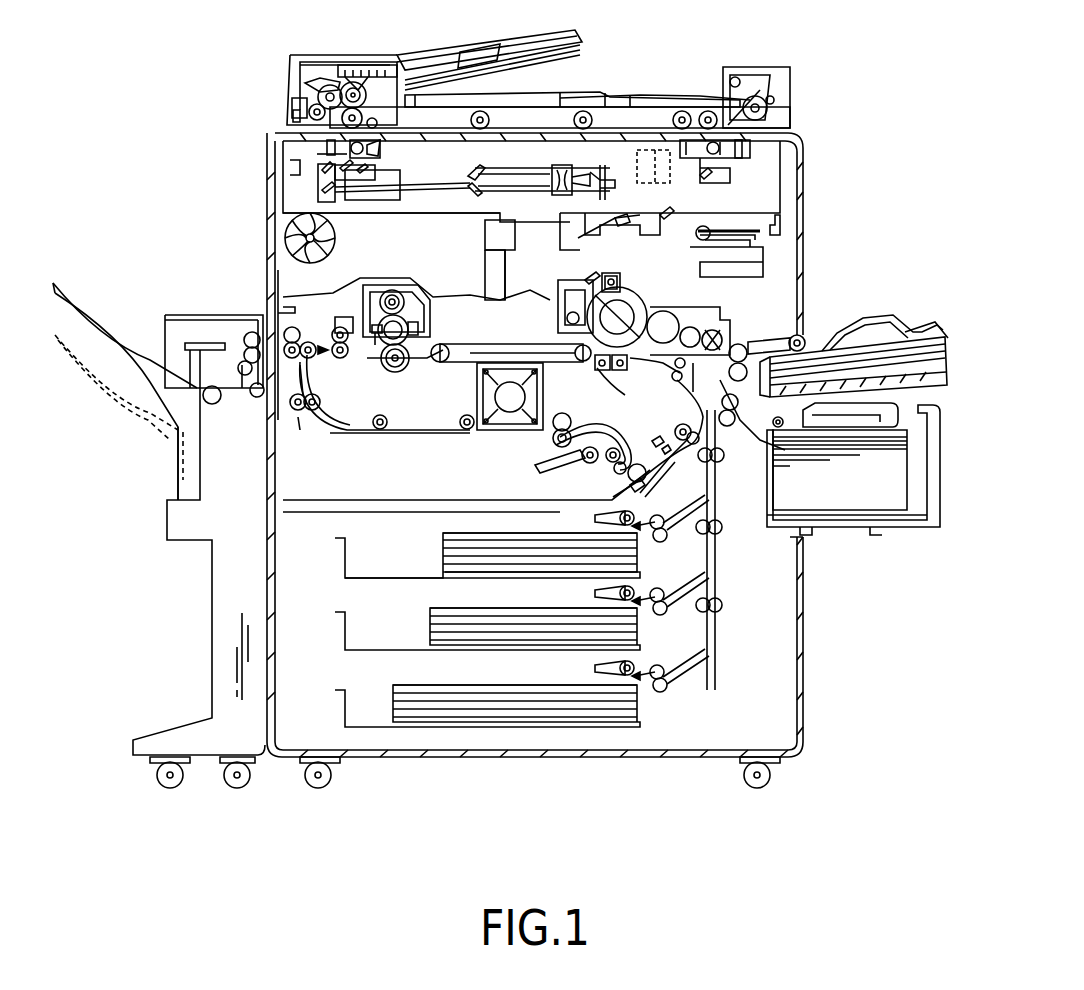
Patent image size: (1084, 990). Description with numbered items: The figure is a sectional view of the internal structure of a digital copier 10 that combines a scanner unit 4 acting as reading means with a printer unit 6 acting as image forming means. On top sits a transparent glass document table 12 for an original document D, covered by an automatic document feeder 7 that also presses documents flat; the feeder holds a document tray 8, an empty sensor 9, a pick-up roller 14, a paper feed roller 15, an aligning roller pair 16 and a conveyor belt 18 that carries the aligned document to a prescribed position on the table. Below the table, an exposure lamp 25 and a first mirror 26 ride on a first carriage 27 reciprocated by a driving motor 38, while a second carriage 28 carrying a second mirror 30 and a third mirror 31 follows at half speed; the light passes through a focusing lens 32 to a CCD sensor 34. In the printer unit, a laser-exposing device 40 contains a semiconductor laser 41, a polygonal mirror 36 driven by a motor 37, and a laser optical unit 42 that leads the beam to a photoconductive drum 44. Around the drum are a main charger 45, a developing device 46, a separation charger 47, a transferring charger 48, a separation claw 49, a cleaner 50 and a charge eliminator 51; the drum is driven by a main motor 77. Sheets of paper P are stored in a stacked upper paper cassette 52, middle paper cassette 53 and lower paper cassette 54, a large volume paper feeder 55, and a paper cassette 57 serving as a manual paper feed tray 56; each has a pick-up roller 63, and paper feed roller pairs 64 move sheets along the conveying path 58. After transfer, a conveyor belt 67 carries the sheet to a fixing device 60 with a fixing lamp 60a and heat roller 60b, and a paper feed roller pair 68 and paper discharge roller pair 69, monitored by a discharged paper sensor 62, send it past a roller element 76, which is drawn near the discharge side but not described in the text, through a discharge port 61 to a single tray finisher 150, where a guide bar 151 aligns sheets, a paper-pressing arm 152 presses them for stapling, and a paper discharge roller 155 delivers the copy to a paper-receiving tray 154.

The digital copier 10 is at (900, 124).
The automatic document feeder 7 is at (438, 38).
The document tray 8 is at (458, 55).
The empty sensor 9 is at (355, 80).
The pick-up roller 14 is at (345, 83).
The paper feed roller 15 is at (305, 102).
The aligning roller pair 16 is at (295, 118).
The conveyor belt 18 is at (510, 108).
The document table 12 is at (640, 125).
The driving motor 38 is at (663, 150).
The scanner unit 4 is at (808, 186).
The first carriage 27 is at (327, 148).
The exposure lamp 25 is at (380, 152).
The first mirror 26 is at (375, 172).
The second mirror 30 is at (318, 178).
The second carriage 28 is at (322, 192).
The third mirror 31 is at (345, 200).
The focusing lens 32 is at (565, 168).
The CCD sensor 34 is at (612, 185).
The semiconductor laser 41 is at (712, 183).
The polygonal mirror 36 is at (748, 170).
The laser-exposing device 40 is at (794, 233).
The laser optical unit 42 is at (572, 231).
The paper discharge roller pair 69 is at (292, 330).
The cleaner 50 is at (555, 300).
The fixing device 60 is at (418, 290).
The heat roller 60b is at (382, 290).
The conveying path 58 is at (459, 335).
The fixing lamp 60a is at (405, 370).
The conveyor belt 67 is at (450, 355).
The separation claw 49 is at (525, 337).
The main motor 77 is at (477, 410).
The conveying rollers 76 is at (305, 340).
The discharged paper sensor 62 is at (335, 330).
The paper feed roller pair 68 is at (345, 358).
The charge eliminator 51 is at (585, 280).
The main charger 45 is at (622, 285).
The photoconductive drum 44 is at (640, 297).
The developing device 46 is at (735, 310).
The printer unit 6 is at (754, 300).
The motor 37 is at (770, 262).
The separation charger 47 is at (595, 368).
The transferring charger 48 is at (618, 372).
The pick-up roller 63 is at (805, 340).
The paper feed roller pairs 64 is at (745, 345).
The manual paper feed tray 56 is at (873, 322).
The paper cassette 57 is at (938, 322).
The large volume paper feeder 55 is at (886, 507).
The upper paper cassette 52 is at (345, 560).
The middle paper cassette 53 is at (345, 634).
The lower paper cassette 54 is at (345, 712).
The single tray finisher 150 is at (165, 330).
The guide bar 151 is at (197, 343).
The discharge port 61 is at (260, 335).
The paper-pressing arm 152 is at (250, 400).
The paper discharge roller 155 is at (212, 405).
The paper-receiving tray 154 is at (90, 310).
The sheet of paper P is at (905, 325).
The original document D is at (615, 105).